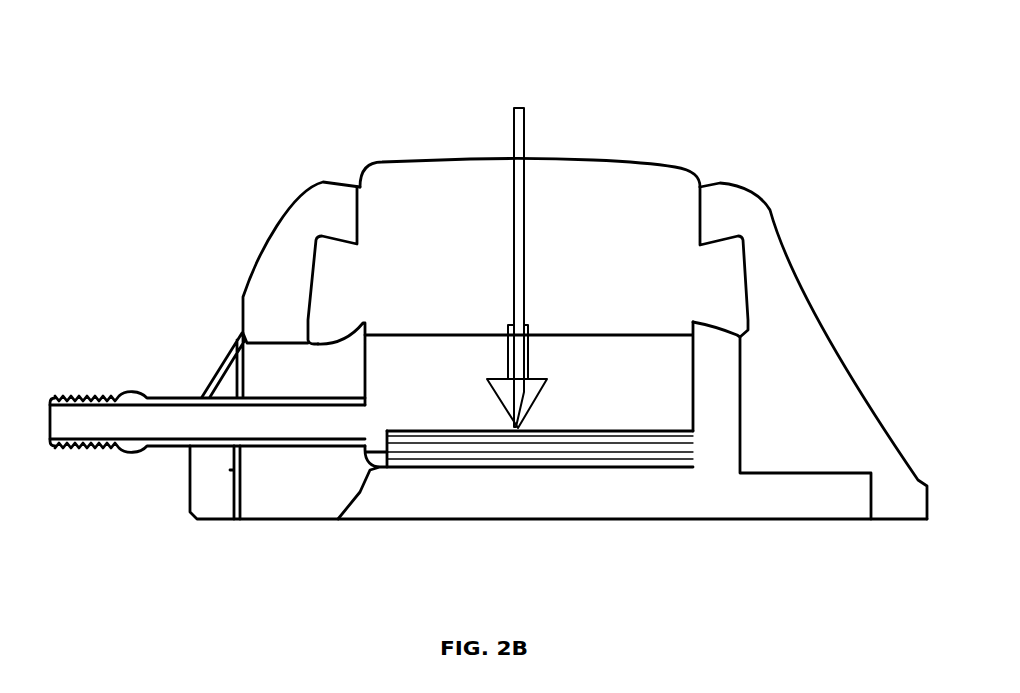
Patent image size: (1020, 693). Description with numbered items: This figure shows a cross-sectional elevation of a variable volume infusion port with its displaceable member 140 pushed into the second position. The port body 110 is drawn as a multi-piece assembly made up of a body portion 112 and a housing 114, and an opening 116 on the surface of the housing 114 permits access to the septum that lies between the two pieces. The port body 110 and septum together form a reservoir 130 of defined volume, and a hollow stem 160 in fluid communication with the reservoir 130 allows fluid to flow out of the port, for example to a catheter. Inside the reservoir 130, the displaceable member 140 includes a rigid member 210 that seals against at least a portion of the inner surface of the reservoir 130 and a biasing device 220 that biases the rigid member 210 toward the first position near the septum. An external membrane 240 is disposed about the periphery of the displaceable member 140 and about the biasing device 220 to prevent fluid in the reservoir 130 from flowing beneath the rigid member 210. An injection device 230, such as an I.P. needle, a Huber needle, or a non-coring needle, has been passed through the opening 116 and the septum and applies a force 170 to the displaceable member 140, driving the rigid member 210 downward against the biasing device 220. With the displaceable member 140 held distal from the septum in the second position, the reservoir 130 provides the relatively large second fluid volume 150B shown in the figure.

The port body 110 is at (733, 179).
The body portion 112 is at (773, 510).
The housing 114 is at (818, 445).
The opening 116 is at (352, 208).
The reservoir 130 is at (354, 369).
The displaceable member 140 is at (698, 433).
The second fluid volume 150B is at (660, 373).
The hollow stem 160 is at (147, 447).
The force 170 is at (529, 358).
The rigid member 210 is at (433, 430).
The biasing device 220 is at (490, 465).
The injection device 230 is at (526, 130).
The external membrane 240 is at (370, 473).